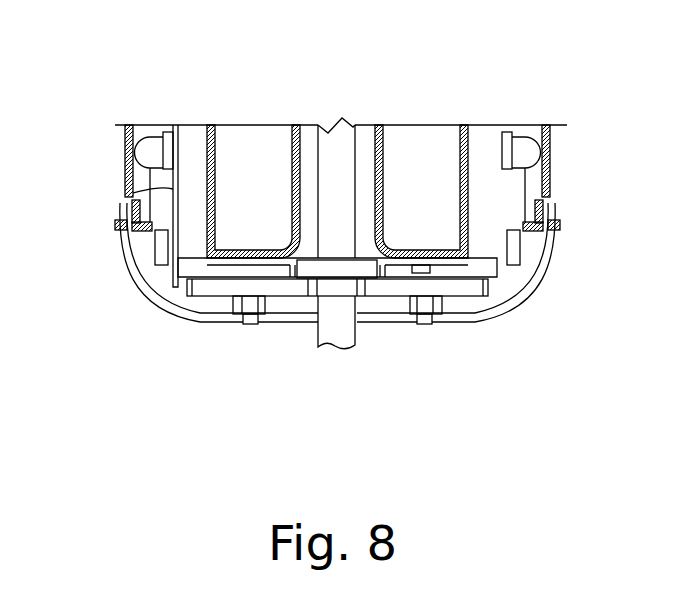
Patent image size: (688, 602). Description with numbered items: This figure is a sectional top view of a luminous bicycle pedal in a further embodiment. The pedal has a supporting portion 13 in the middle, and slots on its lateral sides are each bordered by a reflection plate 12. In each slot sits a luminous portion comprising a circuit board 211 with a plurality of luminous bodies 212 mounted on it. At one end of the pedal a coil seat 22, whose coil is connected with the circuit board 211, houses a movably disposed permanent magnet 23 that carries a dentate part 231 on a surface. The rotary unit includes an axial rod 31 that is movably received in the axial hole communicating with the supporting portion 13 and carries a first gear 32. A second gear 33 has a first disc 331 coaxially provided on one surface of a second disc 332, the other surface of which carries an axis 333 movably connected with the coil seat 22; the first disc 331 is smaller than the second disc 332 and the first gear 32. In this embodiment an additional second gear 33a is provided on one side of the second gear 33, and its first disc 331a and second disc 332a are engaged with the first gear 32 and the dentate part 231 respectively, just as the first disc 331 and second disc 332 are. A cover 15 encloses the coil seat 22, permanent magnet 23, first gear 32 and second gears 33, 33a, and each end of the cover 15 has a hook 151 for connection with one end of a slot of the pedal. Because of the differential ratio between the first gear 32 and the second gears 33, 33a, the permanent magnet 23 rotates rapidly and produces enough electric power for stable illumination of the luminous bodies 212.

The reflection plate 12 is at (125, 167).
The luminous bodies 212 is at (125, 152).
The circuit board 211 is at (133, 193).
The hook 151 is at (556, 210).
The coil seat 22 is at (178, 284).
The supporting portion 13 is at (290, 181).
The axial rod 31 is at (328, 133).
The second disc 332a is at (175, 283).
The cover 15 is at (507, 313).
The second disc 332 is at (493, 292).
The permanent magnet 23 is at (362, 270).
The axis 333 is at (422, 265).
The first gear 32 is at (284, 300).
The dentate part 231 is at (312, 282).
The second gear 33a is at (198, 347).
The first disc 331a is at (234, 308).
The second gear 33 is at (461, 349).
The first disc 331 is at (443, 305).